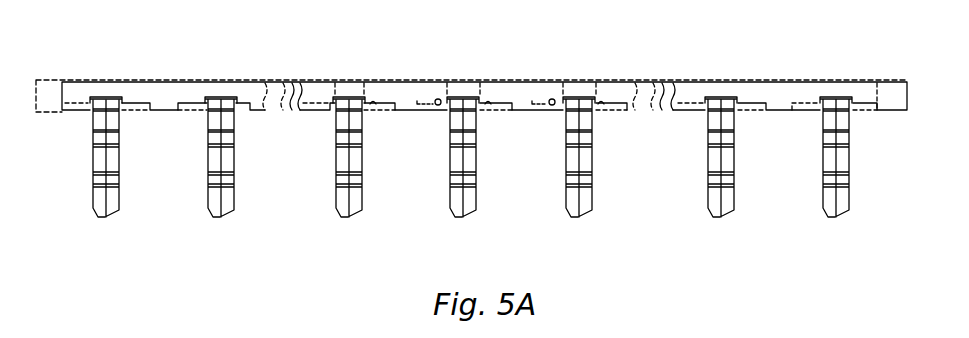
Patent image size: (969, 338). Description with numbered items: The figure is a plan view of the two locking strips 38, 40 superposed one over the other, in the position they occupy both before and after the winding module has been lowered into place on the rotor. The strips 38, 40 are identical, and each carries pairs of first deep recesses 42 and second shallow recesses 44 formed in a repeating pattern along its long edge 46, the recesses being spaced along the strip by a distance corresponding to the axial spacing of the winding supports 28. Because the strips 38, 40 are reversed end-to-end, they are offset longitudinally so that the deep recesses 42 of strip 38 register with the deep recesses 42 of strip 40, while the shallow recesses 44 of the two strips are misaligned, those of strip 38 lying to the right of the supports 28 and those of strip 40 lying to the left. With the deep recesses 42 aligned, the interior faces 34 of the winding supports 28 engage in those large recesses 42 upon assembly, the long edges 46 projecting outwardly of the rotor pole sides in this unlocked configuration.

The winding support 28 is at (477, 165).
The interior face 34 is at (828, 165).
The locking strip 38 is at (230, 80).
The locking strip 40 is at (47, 80).
The first recess 42 is at (110, 103).
The second recess 44 is at (77, 112).
The long edge 46 is at (518, 113).